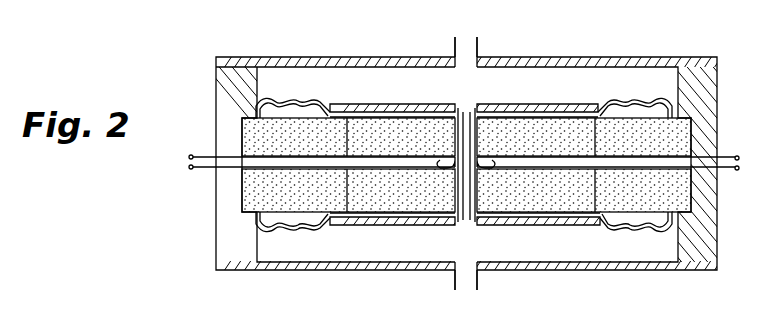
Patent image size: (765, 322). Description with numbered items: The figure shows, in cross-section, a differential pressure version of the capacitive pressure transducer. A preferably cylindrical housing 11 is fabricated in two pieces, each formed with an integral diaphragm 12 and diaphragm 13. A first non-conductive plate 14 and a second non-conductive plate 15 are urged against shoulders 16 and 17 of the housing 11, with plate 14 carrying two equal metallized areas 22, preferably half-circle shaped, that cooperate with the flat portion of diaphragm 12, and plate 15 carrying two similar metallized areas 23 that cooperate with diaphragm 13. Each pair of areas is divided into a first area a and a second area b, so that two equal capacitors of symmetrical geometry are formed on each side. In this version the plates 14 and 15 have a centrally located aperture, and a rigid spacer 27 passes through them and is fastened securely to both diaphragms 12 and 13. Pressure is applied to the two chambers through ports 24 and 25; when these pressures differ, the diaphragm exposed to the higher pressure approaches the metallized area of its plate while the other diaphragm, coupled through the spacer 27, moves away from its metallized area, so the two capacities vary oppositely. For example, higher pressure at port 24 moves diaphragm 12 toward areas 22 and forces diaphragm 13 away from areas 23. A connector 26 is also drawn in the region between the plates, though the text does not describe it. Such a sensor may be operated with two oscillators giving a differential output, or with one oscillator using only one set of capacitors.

The housing 11 is at (219, 77).
The diaphragm 12 is at (375, 104).
The diaphragm 13 is at (352, 226).
The first non-conductive plate 14 is at (242, 134).
The second non-conductive plate 15 is at (242, 179).
The shoulder 16 is at (254, 114).
The shoulder 17 is at (248, 213).
The metallized areas 22 is at (538, 118).
The metallized areas 23 is at (575, 218).
The port 24 is at (477, 40).
The port 25 is at (456, 283).
The hook connector 26 is at (444, 168).
The rigid spacer 27 is at (478, 124).
The first metallized area a is at (392, 108).
The second metallized area b is at (561, 118).